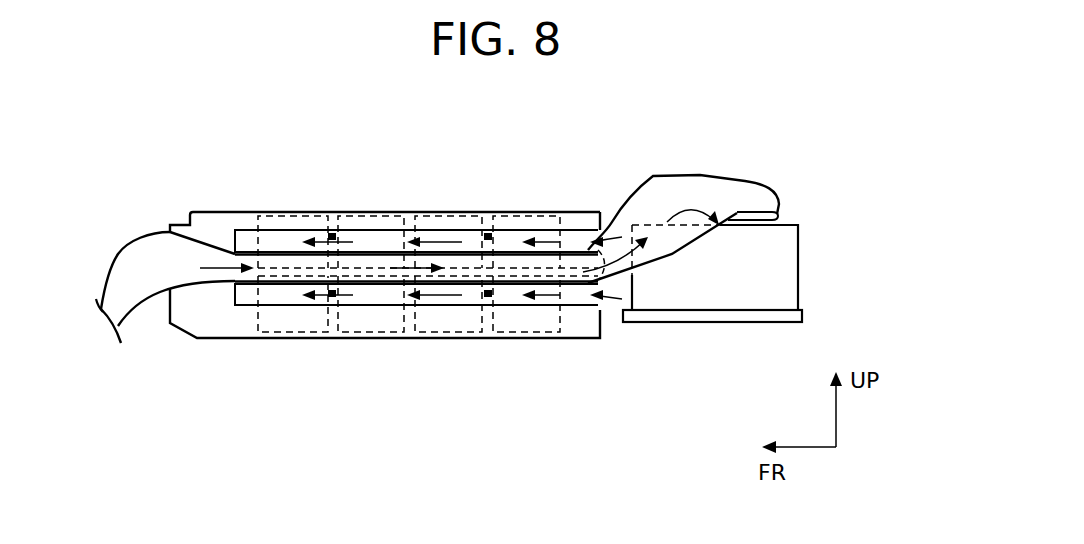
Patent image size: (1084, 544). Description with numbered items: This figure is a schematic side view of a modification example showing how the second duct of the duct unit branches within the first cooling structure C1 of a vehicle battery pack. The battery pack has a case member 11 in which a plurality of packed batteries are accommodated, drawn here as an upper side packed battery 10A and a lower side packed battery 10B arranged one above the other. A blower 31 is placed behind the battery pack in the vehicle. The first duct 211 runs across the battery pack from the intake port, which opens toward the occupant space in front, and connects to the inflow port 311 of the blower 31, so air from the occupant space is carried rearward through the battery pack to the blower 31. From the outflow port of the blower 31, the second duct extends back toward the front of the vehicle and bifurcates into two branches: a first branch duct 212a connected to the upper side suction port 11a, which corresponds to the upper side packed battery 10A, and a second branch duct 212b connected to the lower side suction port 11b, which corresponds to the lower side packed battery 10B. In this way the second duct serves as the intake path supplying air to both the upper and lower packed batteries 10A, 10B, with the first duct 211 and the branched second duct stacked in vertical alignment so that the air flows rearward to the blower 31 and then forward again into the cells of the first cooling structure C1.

The case member 11 is at (232, 206).
The upper side packed battery 10A is at (297, 224).
The lower side packed battery 10B is at (298, 333).
The upper side suction port 11a is at (334, 238).
The lower side suction port 11b is at (329, 300).
The first duct 211 is at (224, 283).
The first branch duct 212a is at (578, 229).
The second branch duct 212b is at (581, 312).
The blower 31 is at (808, 253).
The inflow port 311 is at (780, 216).
The first cooling structure C1 is at (696, 170).